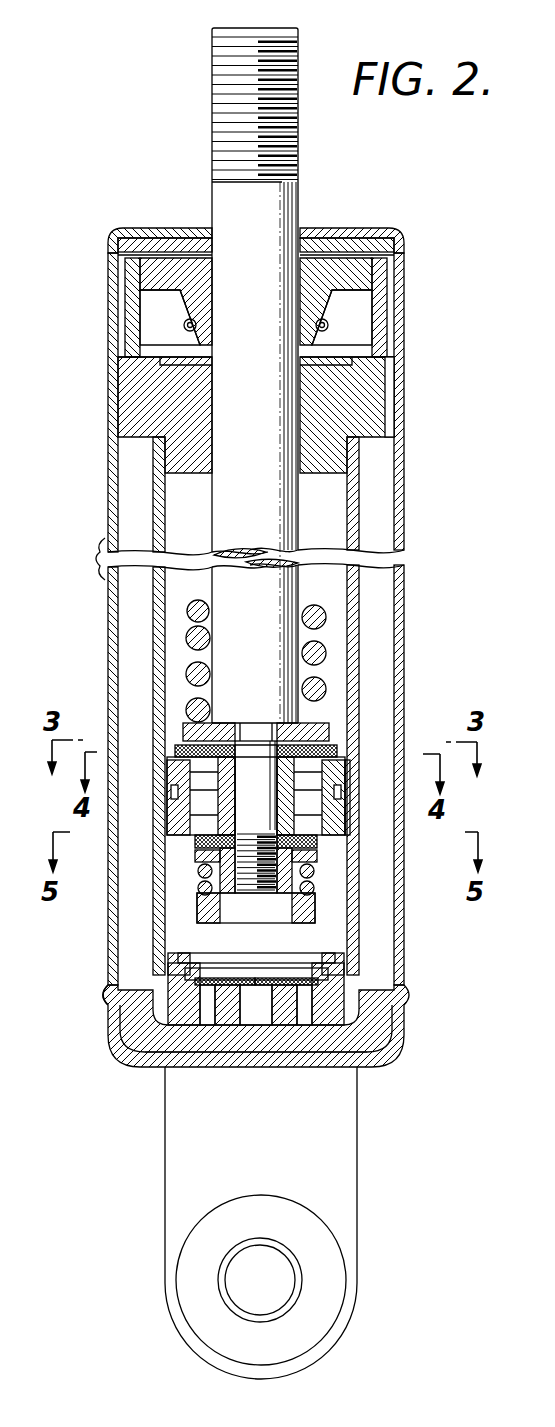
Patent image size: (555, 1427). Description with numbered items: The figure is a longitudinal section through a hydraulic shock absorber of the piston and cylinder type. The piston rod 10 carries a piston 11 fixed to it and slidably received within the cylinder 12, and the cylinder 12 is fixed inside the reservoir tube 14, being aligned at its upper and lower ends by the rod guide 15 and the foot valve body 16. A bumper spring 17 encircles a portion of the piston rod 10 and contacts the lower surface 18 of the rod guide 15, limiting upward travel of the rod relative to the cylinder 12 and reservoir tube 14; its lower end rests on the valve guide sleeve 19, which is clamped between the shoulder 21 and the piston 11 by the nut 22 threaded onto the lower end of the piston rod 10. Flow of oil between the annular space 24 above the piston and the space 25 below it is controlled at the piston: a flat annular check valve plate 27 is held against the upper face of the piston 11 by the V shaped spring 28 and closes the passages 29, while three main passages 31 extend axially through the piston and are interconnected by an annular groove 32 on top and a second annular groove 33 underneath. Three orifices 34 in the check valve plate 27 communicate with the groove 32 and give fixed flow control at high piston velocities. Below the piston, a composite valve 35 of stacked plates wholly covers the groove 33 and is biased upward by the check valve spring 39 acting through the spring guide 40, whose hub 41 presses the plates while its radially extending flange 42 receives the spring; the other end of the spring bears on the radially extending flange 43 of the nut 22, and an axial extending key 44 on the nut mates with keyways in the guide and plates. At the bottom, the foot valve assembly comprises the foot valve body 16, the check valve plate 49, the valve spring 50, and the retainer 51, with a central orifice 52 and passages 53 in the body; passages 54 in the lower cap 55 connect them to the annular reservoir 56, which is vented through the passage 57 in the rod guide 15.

The piston rod 10 is at (298, 207).
The piston 11 is at (352, 766).
The cylinder 12 is at (396, 649).
The reservoir tube 14 is at (386, 612).
The rod guide 15 is at (370, 399).
The foot valve body 16 is at (355, 1027).
The bumper spring 17 is at (327, 612).
The lower surface 18 is at (336, 471).
The valve guide sleeve 19 is at (322, 725).
The shoulder 21 is at (223, 723).
The nut 22 is at (259, 1016).
The annular space 24 is at (332, 522).
The space 25 is at (333, 895).
The check valve plate 27 is at (352, 770).
The V shaped spring 28 is at (232, 747).
The passages 29 is at (195, 787).
The main passages 31 is at (320, 806).
The annular groove 32 is at (200, 778).
The second annular groove 33 is at (215, 838).
The orifices 34 is at (238, 723).
The composite valve 35 is at (340, 849).
The check valve spring 39 is at (316, 875).
The spring guide 40 is at (233, 846).
The hub 41 is at (203, 880).
The radially extending flange 42 is at (197, 853).
The radially extending flange 43 is at (325, 920).
The axial extending key 44 is at (256, 910).
The check valve plate 49 is at (222, 985).
The valve spring 50 is at (310, 967).
The retainer 51 is at (198, 962).
The central orifice 52 is at (262, 1022).
The passages 53 is at (220, 1022).
The passages 54 is at (130, 1025).
The lower cap 55 is at (152, 1052).
The annular reservoir 56 is at (130, 955).
The passage 57 is at (386, 367).